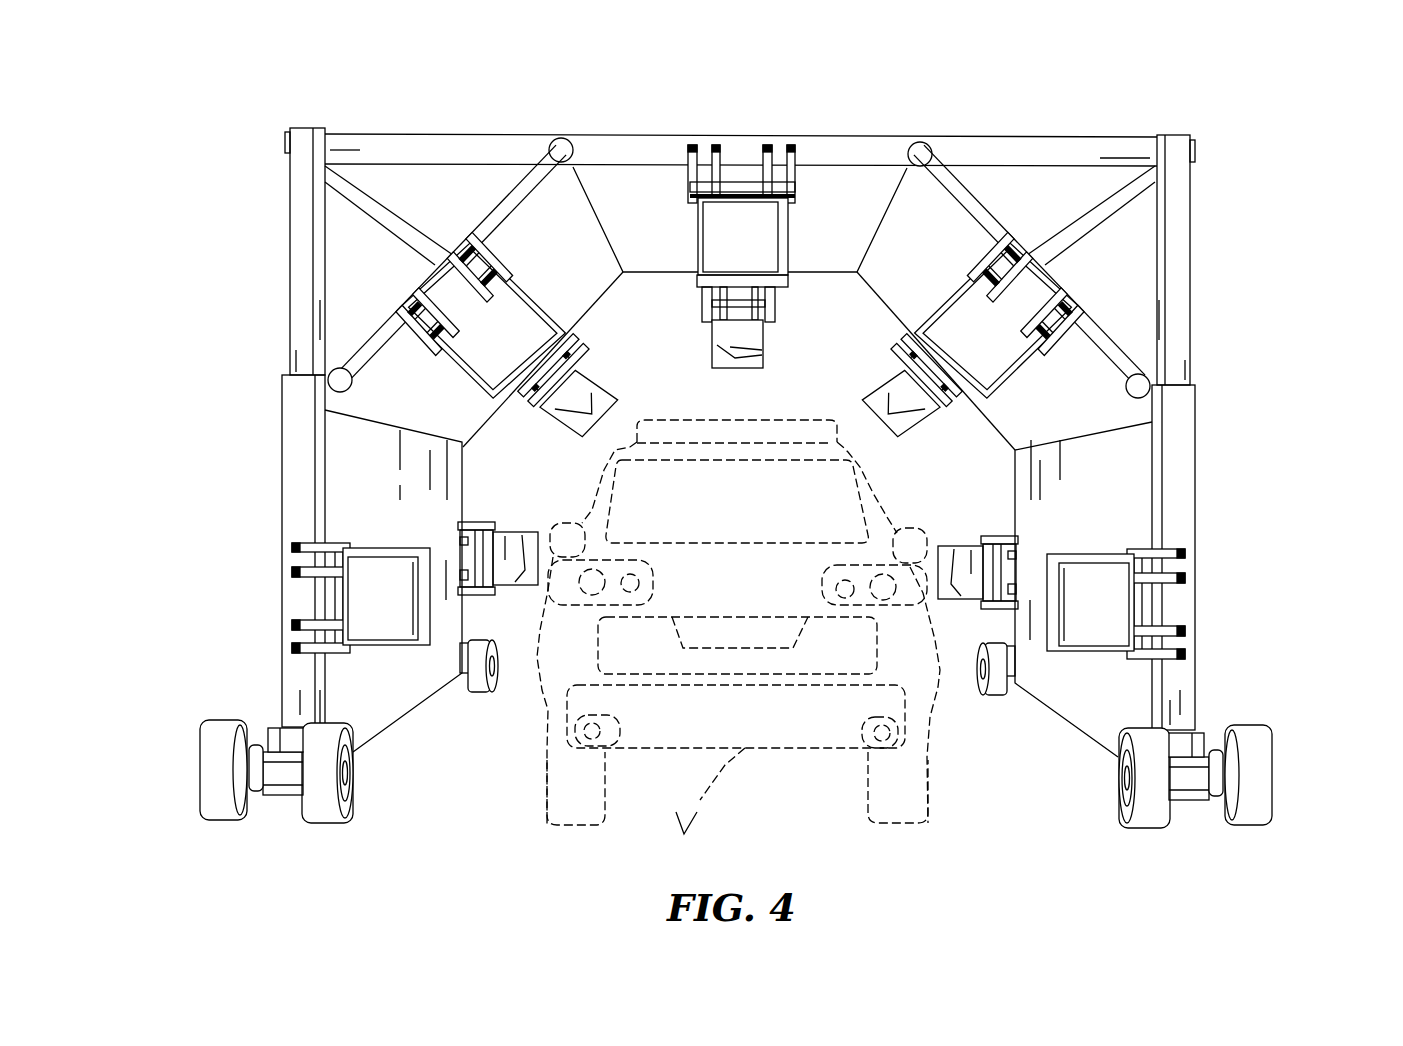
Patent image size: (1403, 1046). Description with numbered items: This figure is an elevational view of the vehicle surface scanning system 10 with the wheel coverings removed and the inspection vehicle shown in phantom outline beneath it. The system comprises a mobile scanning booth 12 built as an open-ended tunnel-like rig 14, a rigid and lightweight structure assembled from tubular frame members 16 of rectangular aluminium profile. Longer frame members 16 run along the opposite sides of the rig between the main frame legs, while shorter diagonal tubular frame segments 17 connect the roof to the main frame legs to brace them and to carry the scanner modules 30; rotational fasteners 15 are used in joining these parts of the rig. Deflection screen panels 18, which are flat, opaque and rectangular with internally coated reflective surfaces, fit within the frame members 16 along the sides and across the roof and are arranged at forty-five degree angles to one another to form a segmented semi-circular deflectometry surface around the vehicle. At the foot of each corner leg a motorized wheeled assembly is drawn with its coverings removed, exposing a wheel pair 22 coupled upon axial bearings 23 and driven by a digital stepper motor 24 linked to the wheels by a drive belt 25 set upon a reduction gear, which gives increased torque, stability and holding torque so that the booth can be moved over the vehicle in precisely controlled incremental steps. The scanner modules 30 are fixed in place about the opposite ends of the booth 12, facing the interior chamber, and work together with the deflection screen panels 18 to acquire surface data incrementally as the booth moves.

The vehicle surface scanning system 10 is at (216, 186).
The mobile scanning booth 12 is at (739, 128).
The tunnel-like rig 14 is at (1128, 145).
The rotational fasteners 15 is at (567, 138).
The tubular frame members 16 is at (1193, 263).
The tubular frame segments 17 is at (483, 223).
The deflection screen panels 18 is at (827, 172).
The wheel pair 22 is at (200, 728).
The axial bearings 23 is at (280, 796).
The stepper motors 24 is at (266, 728).
The drive belt 25 is at (253, 745).
The scanner modules 30 is at (1102, 548).